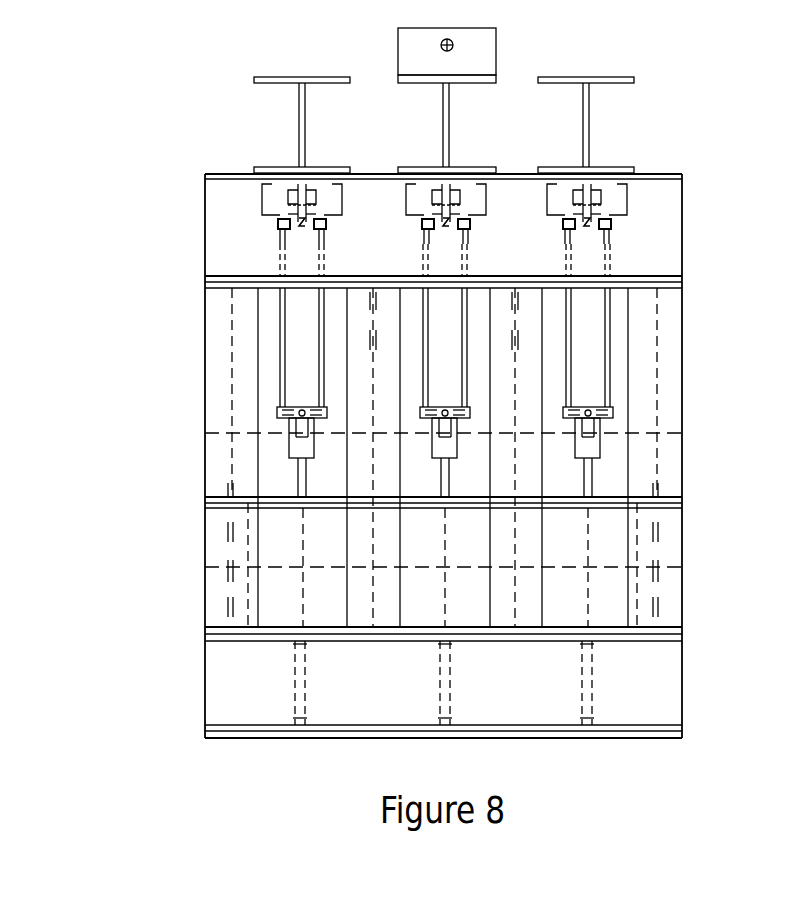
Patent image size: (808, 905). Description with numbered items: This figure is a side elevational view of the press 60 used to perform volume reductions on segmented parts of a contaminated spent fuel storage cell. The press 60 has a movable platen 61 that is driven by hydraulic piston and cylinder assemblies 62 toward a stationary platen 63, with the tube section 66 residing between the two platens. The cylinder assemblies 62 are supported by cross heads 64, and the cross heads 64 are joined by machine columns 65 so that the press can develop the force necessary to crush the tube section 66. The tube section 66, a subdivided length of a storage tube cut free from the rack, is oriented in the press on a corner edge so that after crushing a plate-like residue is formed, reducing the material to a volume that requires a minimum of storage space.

The press 60 is at (383, 675).
The movable platen 61 is at (378, 461).
The hydraulic piston and cylinder assemblies 62 is at (587, 330).
The stationary platen 63 is at (339, 616).
The cross heads 64 is at (586, 126).
The machine columns 65 is at (745, 357).
The tube section 66 is at (383, 456).